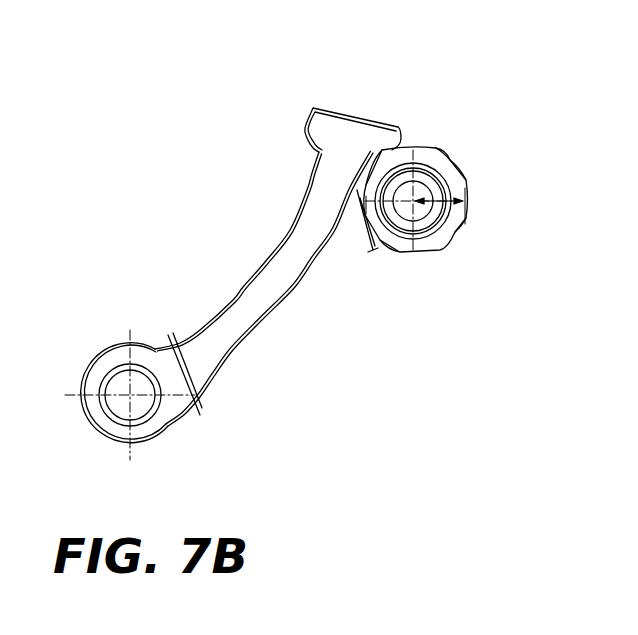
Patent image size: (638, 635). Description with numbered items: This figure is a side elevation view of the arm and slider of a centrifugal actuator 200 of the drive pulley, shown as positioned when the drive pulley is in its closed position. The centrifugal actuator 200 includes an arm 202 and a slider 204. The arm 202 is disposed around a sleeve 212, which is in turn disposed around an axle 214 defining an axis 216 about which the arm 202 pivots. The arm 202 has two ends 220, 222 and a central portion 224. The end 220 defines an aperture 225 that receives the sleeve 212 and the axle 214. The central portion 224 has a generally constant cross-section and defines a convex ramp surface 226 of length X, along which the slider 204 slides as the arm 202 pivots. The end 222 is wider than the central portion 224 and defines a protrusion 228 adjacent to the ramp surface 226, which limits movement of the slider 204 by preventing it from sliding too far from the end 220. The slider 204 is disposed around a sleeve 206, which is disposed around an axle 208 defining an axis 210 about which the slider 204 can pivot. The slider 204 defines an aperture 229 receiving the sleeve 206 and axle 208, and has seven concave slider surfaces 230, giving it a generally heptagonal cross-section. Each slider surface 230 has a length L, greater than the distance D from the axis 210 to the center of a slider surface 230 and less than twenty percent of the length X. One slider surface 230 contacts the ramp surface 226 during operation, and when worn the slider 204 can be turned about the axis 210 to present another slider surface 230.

The centrifugal actuator 200 is at (282, 60).
The arm 202 is at (232, 313).
The slider 204 is at (440, 233).
The sleeve 206 is at (405, 255).
The axle 208 is at (425, 210).
The axis 210 is at (420, 185).
The sleeve 212 is at (118, 423).
The axle 214 is at (118, 383).
The axis 216 is at (130, 393).
The end 220 is at (80, 413).
The end 222 is at (353, 118).
The central portion 224 is at (267, 262).
The aperture 225 is at (155, 407).
The ramp surface 226 is at (280, 318).
The protrusion 228 is at (403, 127).
The aperture 229 is at (400, 197).
The slider surfaces 230 is at (410, 142).